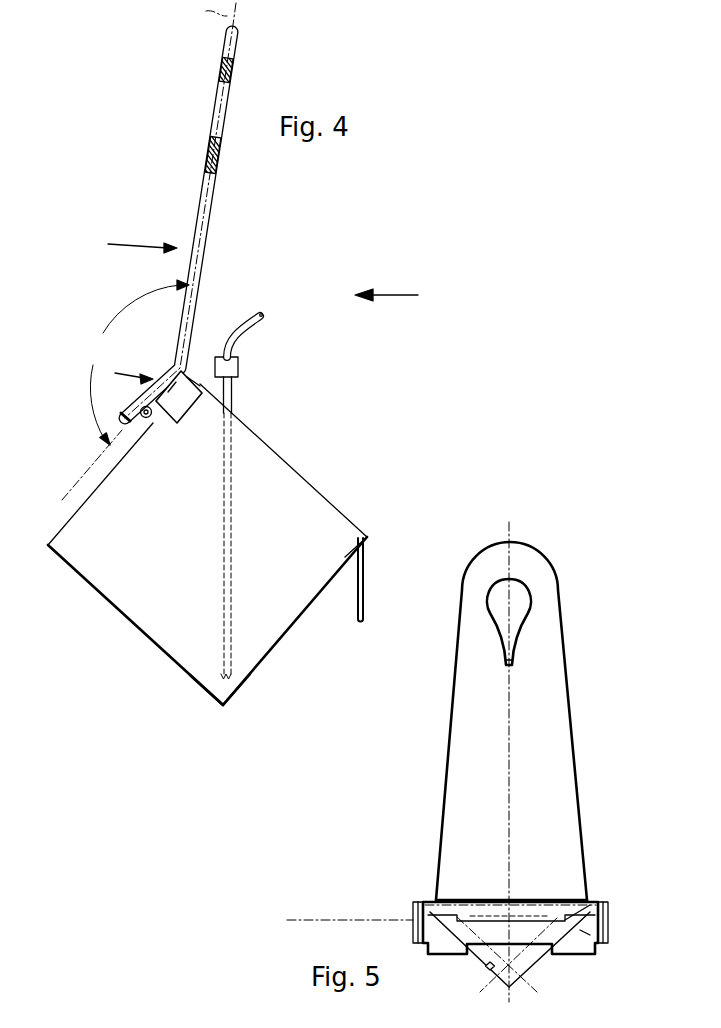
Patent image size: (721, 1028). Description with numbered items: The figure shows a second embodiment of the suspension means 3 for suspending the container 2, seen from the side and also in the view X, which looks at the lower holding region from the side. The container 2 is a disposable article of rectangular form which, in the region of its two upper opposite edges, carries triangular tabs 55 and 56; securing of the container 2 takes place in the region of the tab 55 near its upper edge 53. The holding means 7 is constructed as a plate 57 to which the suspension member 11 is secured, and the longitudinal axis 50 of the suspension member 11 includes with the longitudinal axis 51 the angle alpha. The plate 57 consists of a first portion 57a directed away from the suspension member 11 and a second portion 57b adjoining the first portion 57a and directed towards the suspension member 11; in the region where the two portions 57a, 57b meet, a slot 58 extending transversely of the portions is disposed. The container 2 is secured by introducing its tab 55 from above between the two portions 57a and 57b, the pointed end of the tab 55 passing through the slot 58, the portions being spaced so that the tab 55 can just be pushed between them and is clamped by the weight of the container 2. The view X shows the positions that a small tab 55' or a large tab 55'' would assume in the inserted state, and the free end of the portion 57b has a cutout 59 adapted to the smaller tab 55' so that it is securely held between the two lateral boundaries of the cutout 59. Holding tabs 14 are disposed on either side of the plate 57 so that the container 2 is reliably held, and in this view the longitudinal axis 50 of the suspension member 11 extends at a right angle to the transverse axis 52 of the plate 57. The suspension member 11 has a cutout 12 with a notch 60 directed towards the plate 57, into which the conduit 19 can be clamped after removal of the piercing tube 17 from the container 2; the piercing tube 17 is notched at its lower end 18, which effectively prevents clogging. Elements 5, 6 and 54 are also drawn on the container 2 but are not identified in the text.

In FIG. 4, the container 2 is at (333, 510).
In FIG. 4, the suspension means 3 is at (133, 243).
In FIG. 4, the guide pin 5 is at (233, 412).
In FIG. 4, the lower edge of plate 6 is at (220, 707).
In FIG. 4, the holding means 7 is at (125, 371).
In FIG. 4, the suspension member 11 is at (202, 213).
In FIG. 5, the suspension member 11 is at (468, 700).
In FIG. 4, the cutout 12 is at (215, 113).
In FIG. 5, the cutout 12 is at (497, 597).
In FIG. 4, the holding tabs 14 is at (190, 413).
In FIG. 5, the holding tabs 14 is at (412, 932).
In FIG. 4, the piercing tube 17 is at (222, 517).
In FIG. 4, the lower end 18 is at (232, 677).
In FIG. 4, the conduit 19 is at (243, 317).
In FIG. 4, the longitudinal axis 50 is at (203, 12).
In FIG. 5, the longitudinal axis 50 is at (507, 537).
In FIG. 4, the longitudinal axis 51 is at (80, 477).
In FIG. 5, the transverse axis 52 is at (303, 918).
In FIG. 4, the upper edge 53 is at (195, 380).
In FIG. 4, the plate corner 54 is at (370, 538).
In FIG. 4, the tab 55 is at (113, 399).
In FIG. 5, the tab 55 is at (510, 949).
In FIG. 5, the small tab 55' is at (499, 964).
In FIG. 5, the large tab 55'' is at (512, 964).
In FIG. 4, the tab 56 is at (364, 593).
In FIG. 5, the plate 57 is at (400, 900).
In FIG. 4, the first portion 57a is at (162, 380).
In FIG. 5, the first portion 57a is at (585, 900).
In FIG. 4, the second portion 57b is at (153, 422).
In FIG. 5, the second portion 57b is at (575, 955).
In FIG. 5, the slot 58 is at (486, 966).
In FIG. 5, the cutout 59 is at (477, 917).
In FIG. 5, the notch 60 is at (507, 660).
In FIG. 4, the view x X is at (394, 296).